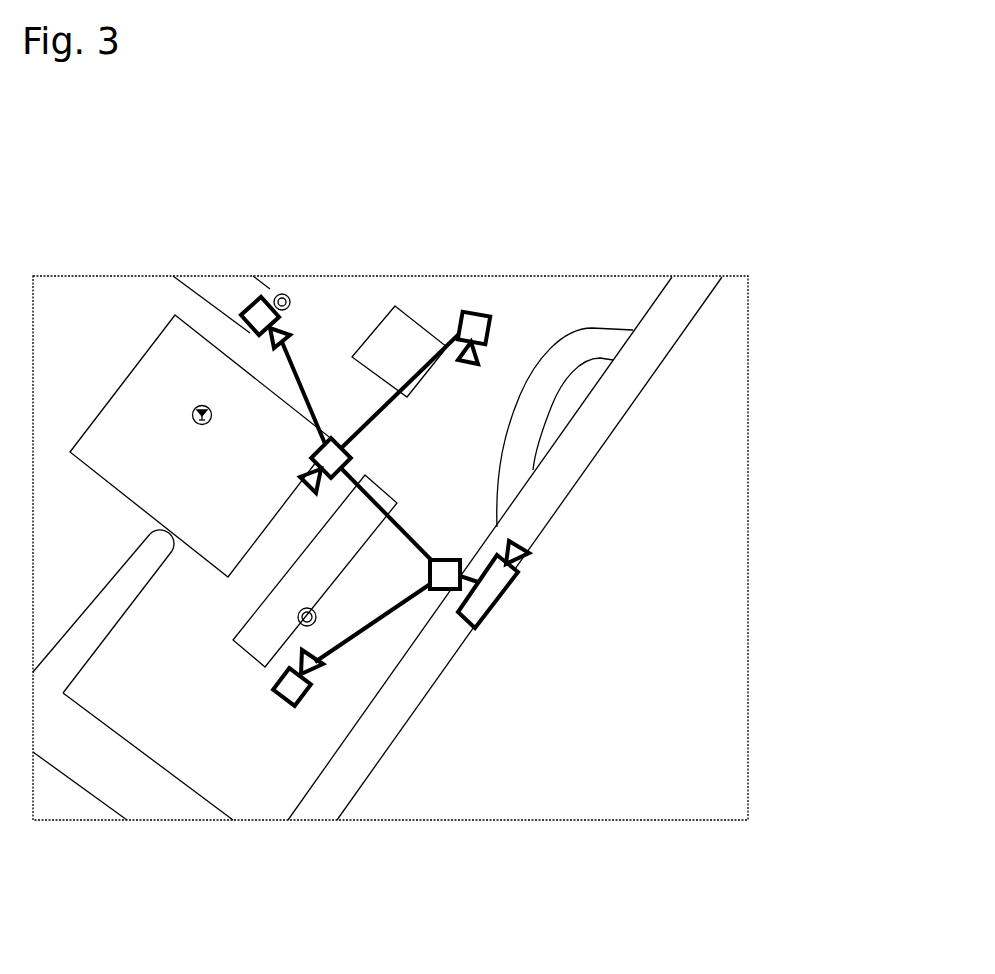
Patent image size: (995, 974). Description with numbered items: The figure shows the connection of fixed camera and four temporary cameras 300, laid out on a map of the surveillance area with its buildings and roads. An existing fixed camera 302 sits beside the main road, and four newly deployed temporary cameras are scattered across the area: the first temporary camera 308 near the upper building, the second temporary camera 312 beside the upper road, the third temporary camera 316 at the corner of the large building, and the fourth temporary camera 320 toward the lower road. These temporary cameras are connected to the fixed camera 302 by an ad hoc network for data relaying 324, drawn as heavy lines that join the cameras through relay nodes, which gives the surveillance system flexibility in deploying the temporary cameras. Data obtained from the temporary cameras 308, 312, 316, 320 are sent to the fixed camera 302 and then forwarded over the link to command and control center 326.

The connection of fixed camera and four temporary cameras 300 is at (720, 213).
The fixed camera 302 is at (500, 585).
The temporary camera 1 308 is at (476, 308).
The temporary camera 2 312 is at (252, 298).
The temporary camera 3 316 is at (313, 462).
The temporary camera 4 320 is at (280, 702).
The ad hoc network for data relaying 324 is at (363, 423).
The link to command and control center 326 is at (440, 590).